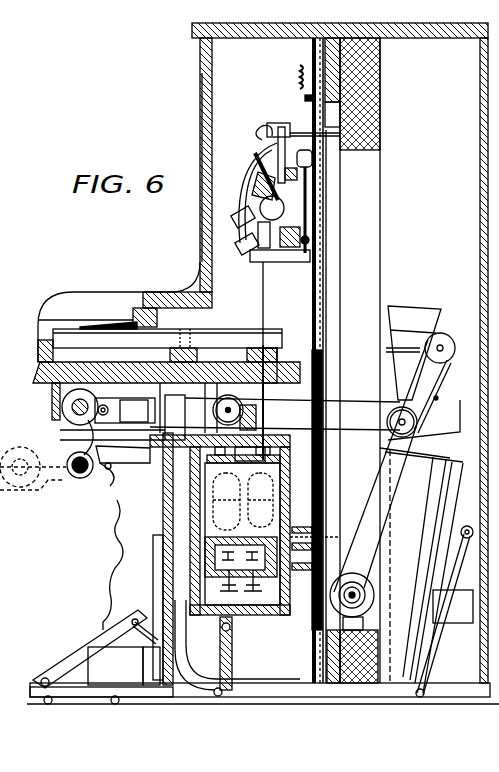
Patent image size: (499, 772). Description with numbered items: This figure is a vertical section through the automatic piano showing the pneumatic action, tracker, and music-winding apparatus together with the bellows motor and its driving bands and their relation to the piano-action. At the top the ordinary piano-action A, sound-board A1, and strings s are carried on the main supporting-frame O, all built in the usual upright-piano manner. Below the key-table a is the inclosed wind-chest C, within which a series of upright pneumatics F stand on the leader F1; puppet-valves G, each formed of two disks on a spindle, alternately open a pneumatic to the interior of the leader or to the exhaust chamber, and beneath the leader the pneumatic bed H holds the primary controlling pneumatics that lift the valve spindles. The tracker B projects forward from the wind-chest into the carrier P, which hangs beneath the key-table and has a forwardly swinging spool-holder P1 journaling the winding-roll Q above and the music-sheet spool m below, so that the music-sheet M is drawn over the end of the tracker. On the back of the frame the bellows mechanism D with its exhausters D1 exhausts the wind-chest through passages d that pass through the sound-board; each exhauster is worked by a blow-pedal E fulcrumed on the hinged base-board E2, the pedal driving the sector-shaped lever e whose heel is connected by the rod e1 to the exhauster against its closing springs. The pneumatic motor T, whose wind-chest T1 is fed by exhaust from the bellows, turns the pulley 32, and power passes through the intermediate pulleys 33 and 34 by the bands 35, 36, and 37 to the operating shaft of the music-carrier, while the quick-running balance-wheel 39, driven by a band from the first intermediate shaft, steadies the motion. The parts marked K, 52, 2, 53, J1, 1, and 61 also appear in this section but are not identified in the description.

The main supporting-frame O is at (370, 108).
The key-table a is at (166, 372).
The keyboard K is at (196, 338).
The piano-action A is at (279, 192).
The curved guide arm 52 is at (250, 174).
The hub 2 is at (272, 219).
The action rod 53 is at (308, 240).
The sound-board A1 is at (326, 288).
The strings s is at (309, 311).
The spool-holder P1 is at (62, 410).
The winding-roll Q is at (75, 412).
The music-sheet M is at (80, 445).
The music-sheet spool m is at (78, 474).
The frame or carrier P is at (108, 481).
The pulley 34 is at (230, 404).
The band 37 is at (181, 417).
The band 36 is at (275, 408).
The connecting rod J1 is at (270, 415).
The wind-chest C is at (283, 500).
The valve rod 1 is at (283, 462).
The upright pneumatics F is at (243, 501).
The puppet-valves G is at (262, 585).
The tubes or passages d is at (316, 548).
The pneumatic bed H is at (236, 653).
The sector-shaped lever e is at (198, 648).
The connecting-rod e1 is at (305, 698).
The base-board E2 is at (82, 692).
The blow-pedal E is at (92, 650).
The leader F1 is at (190, 555).
The tracker B is at (110, 505).
The pneumatic engine or motor T is at (413, 353).
The pulley 32 is at (452, 342).
The pulley 33 is at (388, 423).
The band 35 is at (449, 372).
The pivot 61 is at (440, 398).
The wind-chest of the motor T1 is at (442, 431).
The balance-wheel 39 is at (374, 596).
The bellows mechanism D is at (426, 570).
The exhauster or feeder D1 is at (425, 652).